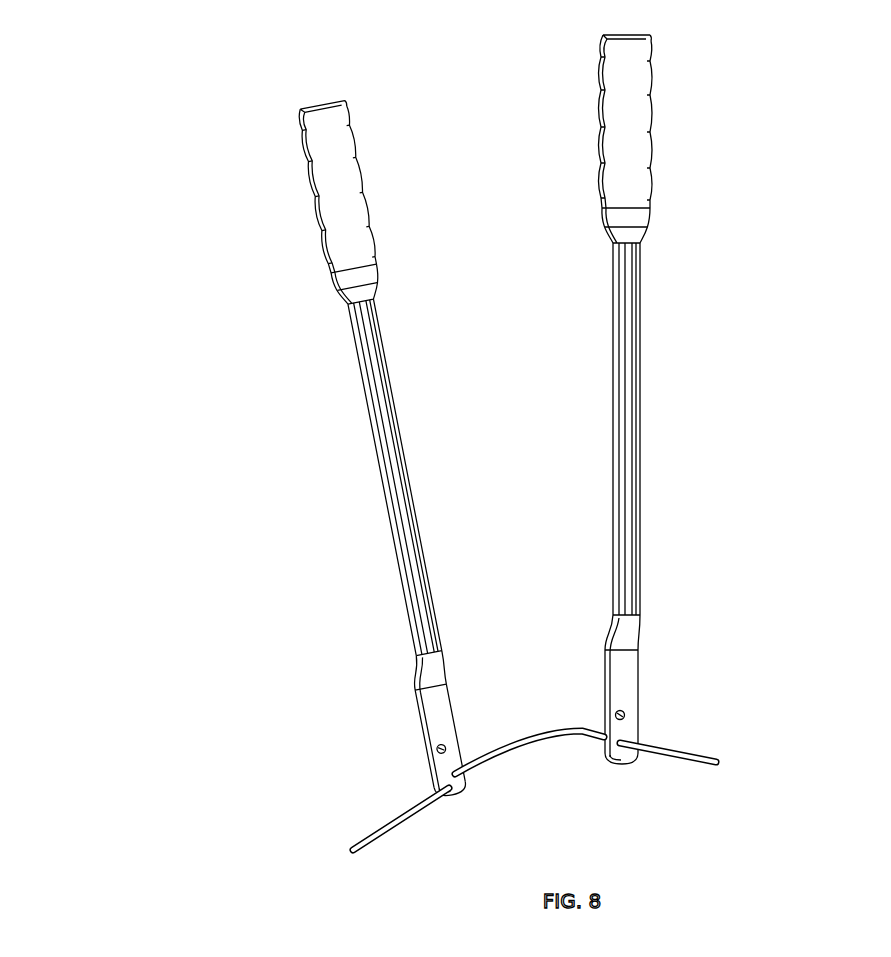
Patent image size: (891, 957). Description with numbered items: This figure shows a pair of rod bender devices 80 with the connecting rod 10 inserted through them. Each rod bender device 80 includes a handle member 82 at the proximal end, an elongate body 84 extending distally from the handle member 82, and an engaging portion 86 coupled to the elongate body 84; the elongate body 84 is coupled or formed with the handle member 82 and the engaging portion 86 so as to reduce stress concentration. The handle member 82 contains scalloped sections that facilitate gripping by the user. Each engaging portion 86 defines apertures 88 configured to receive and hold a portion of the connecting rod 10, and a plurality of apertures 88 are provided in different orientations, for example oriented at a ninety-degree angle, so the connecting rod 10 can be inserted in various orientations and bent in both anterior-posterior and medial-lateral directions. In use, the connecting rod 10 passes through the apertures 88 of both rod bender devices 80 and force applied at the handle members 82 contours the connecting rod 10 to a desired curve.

The rod bender device 80 is at (503, 444).
The handle member 82 is at (338, 176).
The elongate body 84 is at (394, 410).
The engaging portion 86 is at (445, 718).
The aperture 88 is at (447, 767).
The connecting rod 10 is at (718, 760).